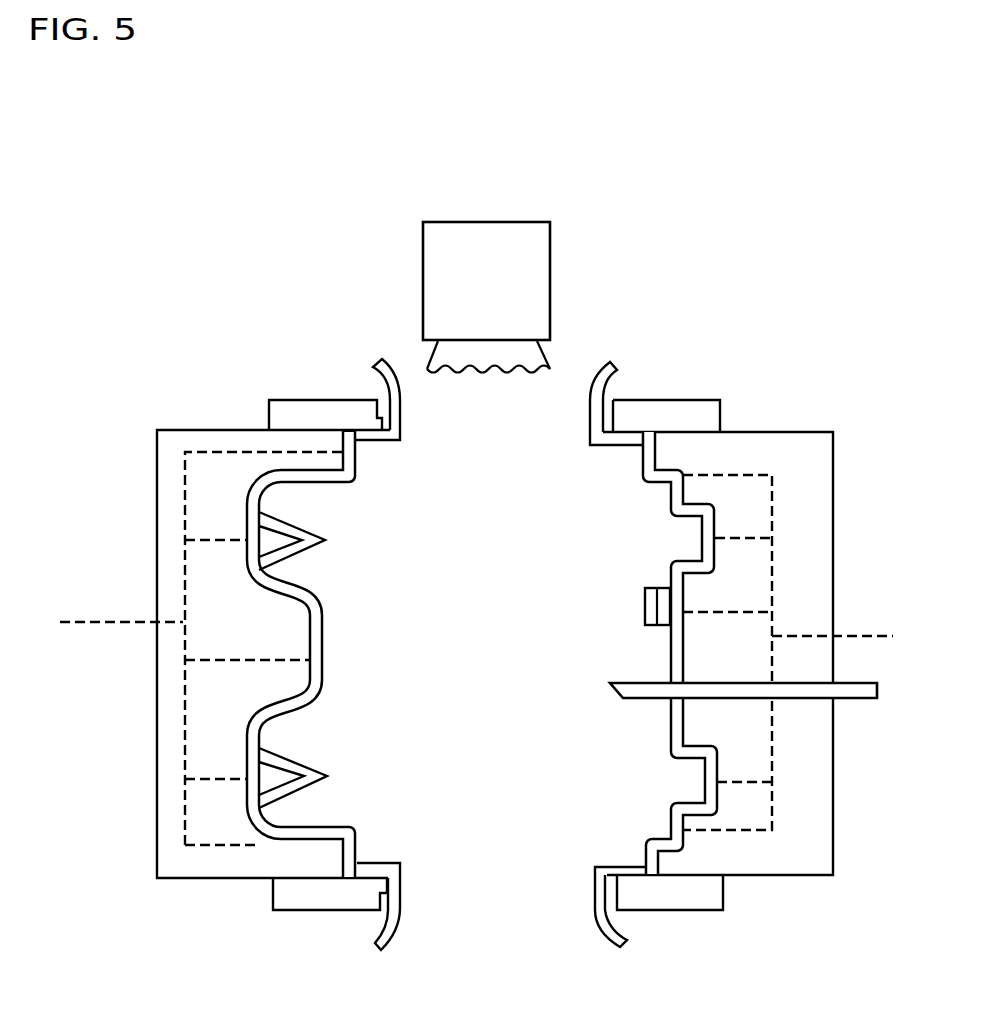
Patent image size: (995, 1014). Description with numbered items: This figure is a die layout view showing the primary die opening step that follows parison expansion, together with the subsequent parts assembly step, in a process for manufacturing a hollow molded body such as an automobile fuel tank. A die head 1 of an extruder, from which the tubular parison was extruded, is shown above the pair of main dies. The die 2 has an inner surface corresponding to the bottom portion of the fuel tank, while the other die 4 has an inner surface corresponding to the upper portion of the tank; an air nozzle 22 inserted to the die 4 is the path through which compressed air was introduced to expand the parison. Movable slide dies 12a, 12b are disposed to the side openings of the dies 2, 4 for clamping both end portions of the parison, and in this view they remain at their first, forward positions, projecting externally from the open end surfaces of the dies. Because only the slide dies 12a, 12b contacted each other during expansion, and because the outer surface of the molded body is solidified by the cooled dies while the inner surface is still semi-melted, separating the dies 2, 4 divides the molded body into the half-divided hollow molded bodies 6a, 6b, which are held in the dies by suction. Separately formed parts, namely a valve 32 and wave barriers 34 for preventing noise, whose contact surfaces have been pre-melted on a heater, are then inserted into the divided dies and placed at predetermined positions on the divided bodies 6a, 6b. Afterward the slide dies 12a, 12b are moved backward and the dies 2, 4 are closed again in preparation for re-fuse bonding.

The die head 1 is at (487, 247).
The die 2 is at (175, 826).
The die 4 is at (803, 818).
The divided hollow molded body 6a is at (323, 658).
The divided hollow molded body 6b is at (677, 725).
The slide die 12a is at (306, 415).
The slide die 12b is at (677, 417).
The air nozzle 22 is at (723, 690).
The valve 32 is at (644, 608).
The wave barrier 34 is at (326, 540).